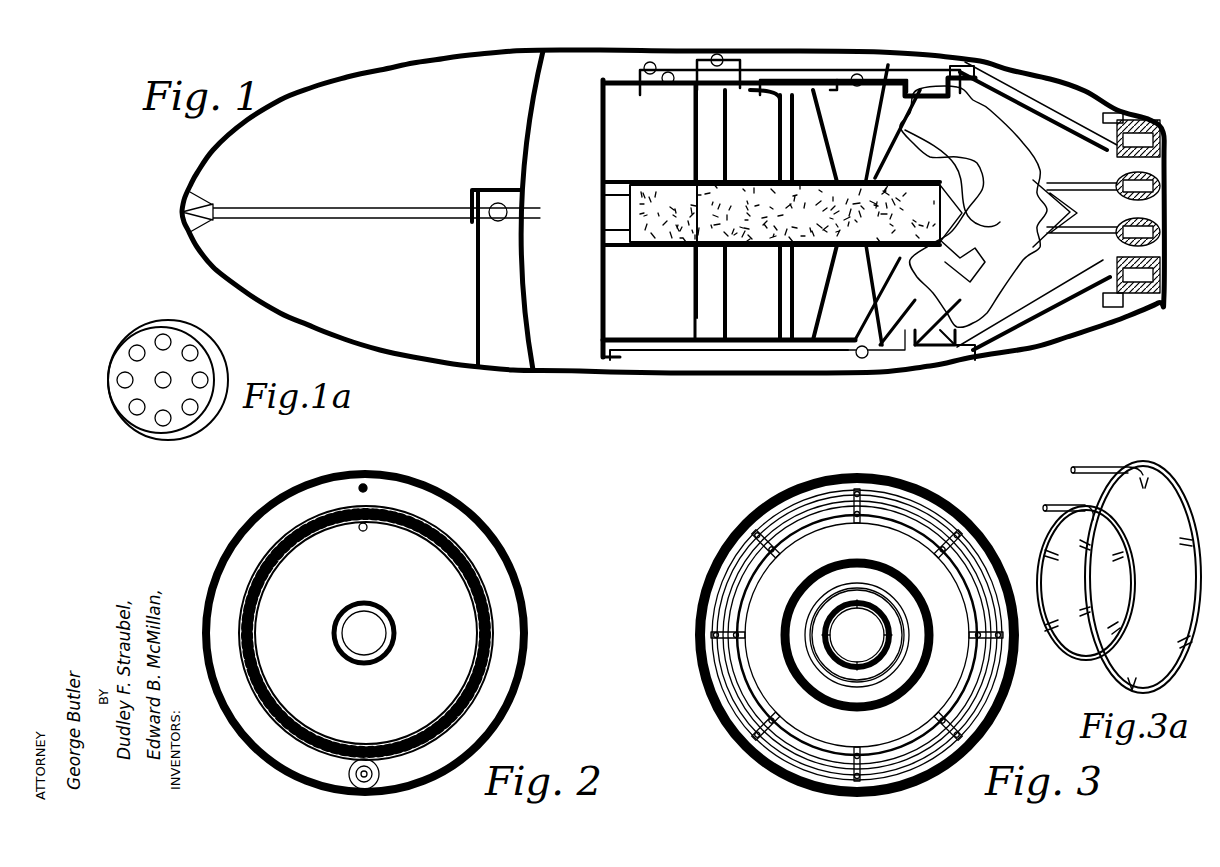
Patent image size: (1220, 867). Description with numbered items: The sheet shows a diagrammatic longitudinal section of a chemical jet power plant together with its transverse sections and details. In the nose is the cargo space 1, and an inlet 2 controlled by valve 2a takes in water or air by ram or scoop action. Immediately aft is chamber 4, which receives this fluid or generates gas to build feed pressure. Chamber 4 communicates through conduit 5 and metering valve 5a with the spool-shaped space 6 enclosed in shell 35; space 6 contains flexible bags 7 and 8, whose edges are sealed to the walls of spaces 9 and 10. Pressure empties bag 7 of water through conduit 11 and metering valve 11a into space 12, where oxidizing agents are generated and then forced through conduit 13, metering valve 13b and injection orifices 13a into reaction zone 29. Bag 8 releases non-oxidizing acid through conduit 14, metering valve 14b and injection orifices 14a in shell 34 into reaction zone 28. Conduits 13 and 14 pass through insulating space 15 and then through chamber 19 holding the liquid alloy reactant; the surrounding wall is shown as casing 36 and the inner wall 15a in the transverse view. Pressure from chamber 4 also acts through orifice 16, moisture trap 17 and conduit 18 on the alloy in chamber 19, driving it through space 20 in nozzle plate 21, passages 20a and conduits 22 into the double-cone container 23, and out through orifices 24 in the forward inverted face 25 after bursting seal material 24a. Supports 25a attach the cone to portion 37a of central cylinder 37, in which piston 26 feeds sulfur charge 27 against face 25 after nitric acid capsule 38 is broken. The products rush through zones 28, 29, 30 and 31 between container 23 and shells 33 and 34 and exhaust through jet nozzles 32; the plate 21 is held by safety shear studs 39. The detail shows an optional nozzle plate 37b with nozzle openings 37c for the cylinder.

In FIG. 1, the cargo space 1 is at (392, 97).
In FIG. 1, the inlet 2 is at (435, 215).
In FIG. 1, the valve 2a is at (498, 222).
In FIG. 1, the chamber 4 is at (558, 78).
In FIG. 1, the conduit 5 is at (618, 78).
In FIG. 1, the metering valve 5a is at (660, 85).
In FIG. 1, the spool-shaped space 6 is at (790, 343).
In FIG. 1, the flexible bag 7 is at (778, 110).
In FIG. 1, the flexible bag 8 is at (795, 345).
In FIG. 2, the flexible bag 8 is at (268, 556).
In FIG. 1, the space 9 is at (752, 108).
In FIG. 1, the space 10 is at (805, 110).
In FIG. 1, the conduit 11 is at (735, 65).
In FIG. 1, the metering valve 11a is at (713, 55).
In FIG. 1, the space 12 is at (678, 105).
In FIG. 1, the conduit 13 is at (668, 75).
In FIG. 2, the conduit 13 is at (358, 486).
In FIG. 3, the conduit 13 is at (995, 680).
In FIG. 3A, the conduit 13 is at (1097, 468).
In FIG. 1, the injection orifices 13a is at (965, 92).
In FIG. 3, the injection orifices 13a is at (752, 512).
In FIG. 3A, the injection orifices 13a is at (1150, 476).
In FIG. 1, the metering valve 13b is at (648, 62).
In FIG. 1, the conduit 14 is at (862, 108).
In FIG. 2, the conduit 14 is at (367, 532).
In FIG. 3, the conduit 14 is at (965, 695).
In FIG. 3A, the conduit 14 is at (1070, 506).
In FIG. 1, the injection orifices 14a is at (945, 355).
In FIG. 3, the injection orifices 14a is at (762, 545).
In FIG. 3A, the injection orifices 14a is at (1112, 625).
In FIG. 1, the metering valve 14b is at (856, 74).
In FIG. 1, the space 15 is at (880, 105).
In FIG. 3, the wall 15a is at (702, 590).
In FIG. 1, the orifice 16 is at (614, 356).
In FIG. 1, the moisture trap 17 is at (660, 353).
In FIG. 2, the moisture trap 17 is at (395, 788).
In FIG. 1, the conduit 18 is at (862, 358).
In FIG. 2, the conduit 18 is at (349, 778).
In FIG. 1, the chamber 19 is at (1055, 92).
In FIG. 1, the space 20 is at (1166, 140).
In FIG. 1, the passages 20a is at (1166, 168).
In FIG. 1, the nozzle plate 21 is at (1140, 130).
In FIG. 1, the conduits 22 is at (1095, 182).
In FIG. 1, the container 23 is at (1012, 160).
In FIG. 3, the container 23 is at (810, 645).
In FIG. 1, the orifices 24 is at (965, 228).
In FIG. 1, the seal material 24a is at (980, 258).
In FIG. 1, the forward inverted face 25 is at (893, 230).
In FIG. 3, the supports 25a is at (835, 660).
In FIG. 1, the piston 26 is at (600, 216).
In FIG. 1, the sulfur charge 27 is at (680, 240).
In FIG. 3, the sulfur charge 27 is at (812, 690).
In FIG. 1, the reaction zone 28 is at (935, 338).
In FIG. 3, the reaction zone 28 is at (900, 548).
In FIG. 1, the reaction zone 29 is at (960, 330).
In FIG. 3, the reaction zone 29 is at (960, 730).
In FIG. 1, the reaction zone 30 is at (1000, 325).
In FIG. 1, the reaction zone 31 is at (1060, 285).
In FIG. 1, the jet nozzles 32 is at (1160, 262).
In FIG. 1, the shell 33 is at (990, 98).
In FIG. 1, the shell 34 is at (930, 80).
In FIG. 3, the shell 34 is at (825, 700).
In FIG. 1, the shell 35 is at (715, 343).
In FIG. 2, the shell 35 is at (486, 578).
In FIG. 1, the casing 36 is at (597, 58).
In FIG. 2, the casing 36 is at (492, 540).
In FIG. 3, the casing 36 is at (712, 565).
In FIG. 1, the central cylinder 37 is at (648, 245).
In FIG. 2, the central cylinder 37 is at (396, 618).
In FIG. 1, the portion of central cylinder 37a is at (870, 265).
In FIG. 3, the portion of central cylinder 37a is at (820, 618).
In FIG. 1A, the nozzle plate 37b is at (178, 340).
In FIG. 1A, the nozzle openings 37c is at (160, 340).
In FIG. 1, the nitric acid capsule 38 is at (796, 212).
In FIG. 1, the safety shear studs 39 is at (1128, 300).